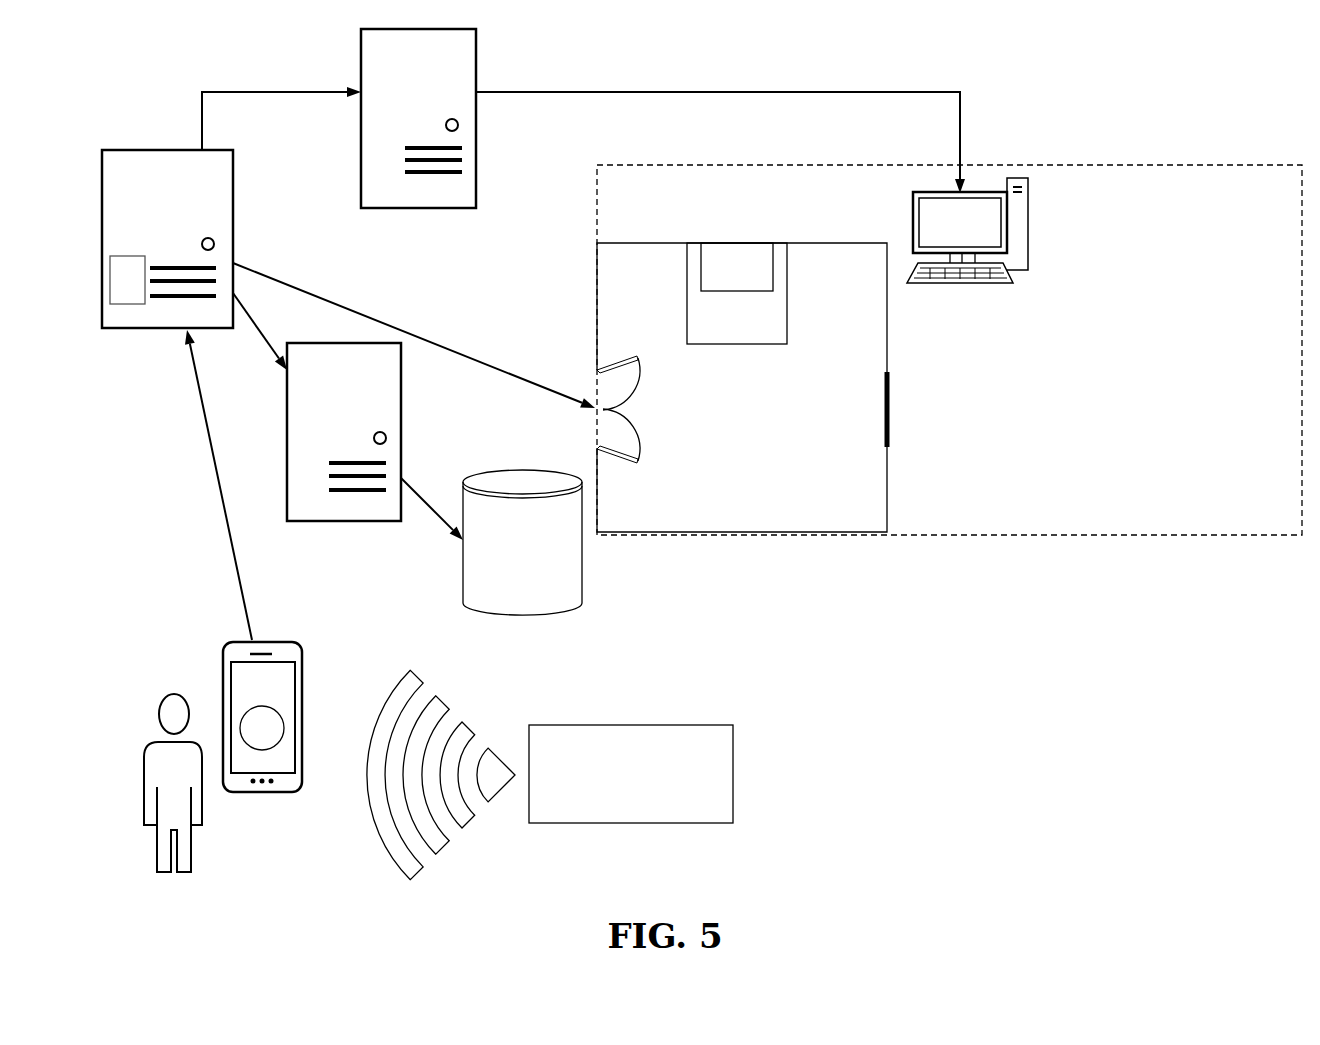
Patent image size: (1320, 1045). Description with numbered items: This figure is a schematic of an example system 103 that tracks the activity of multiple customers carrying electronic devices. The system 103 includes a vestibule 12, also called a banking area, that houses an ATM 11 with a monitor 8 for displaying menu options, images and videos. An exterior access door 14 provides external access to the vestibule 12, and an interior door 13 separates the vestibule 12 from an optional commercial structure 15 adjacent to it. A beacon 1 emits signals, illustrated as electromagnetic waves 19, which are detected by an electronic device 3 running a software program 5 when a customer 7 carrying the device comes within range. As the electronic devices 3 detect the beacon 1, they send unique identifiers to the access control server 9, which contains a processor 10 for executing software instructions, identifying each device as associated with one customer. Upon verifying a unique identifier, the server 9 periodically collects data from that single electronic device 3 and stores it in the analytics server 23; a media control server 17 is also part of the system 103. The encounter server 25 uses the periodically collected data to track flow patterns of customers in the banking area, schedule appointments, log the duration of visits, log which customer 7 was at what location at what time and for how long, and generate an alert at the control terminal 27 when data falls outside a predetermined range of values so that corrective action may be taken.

The system 103 is at (1075, 120).
The beacon 1 is at (631, 774).
The electronic device 3 is at (274, 686).
The software program 5 is at (262, 728).
The customer 7 is at (173, 783).
The monitor 8 is at (737, 267).
The server 9 is at (167, 239).
The processor 10 is at (127, 280).
The automated transaction machine (ATM) 11 is at (737, 293).
The vestibule 12 is at (742, 387).
The interior door 13 is at (889, 410).
The exterior access door 14 is at (596, 391).
The optional commercial structure 15 is at (949, 350).
The media control server 17 is at (344, 432).
The electromagnetic waves 19 is at (450, 708).
The analytics server 23 is at (522, 542).
The encounter server 25 is at (418, 118).
The control terminal 27 is at (967, 230).